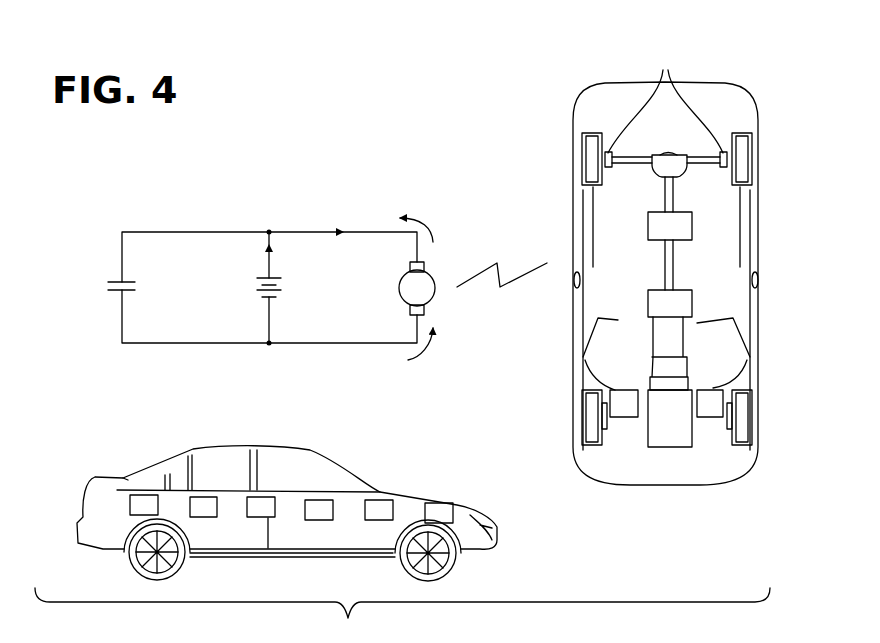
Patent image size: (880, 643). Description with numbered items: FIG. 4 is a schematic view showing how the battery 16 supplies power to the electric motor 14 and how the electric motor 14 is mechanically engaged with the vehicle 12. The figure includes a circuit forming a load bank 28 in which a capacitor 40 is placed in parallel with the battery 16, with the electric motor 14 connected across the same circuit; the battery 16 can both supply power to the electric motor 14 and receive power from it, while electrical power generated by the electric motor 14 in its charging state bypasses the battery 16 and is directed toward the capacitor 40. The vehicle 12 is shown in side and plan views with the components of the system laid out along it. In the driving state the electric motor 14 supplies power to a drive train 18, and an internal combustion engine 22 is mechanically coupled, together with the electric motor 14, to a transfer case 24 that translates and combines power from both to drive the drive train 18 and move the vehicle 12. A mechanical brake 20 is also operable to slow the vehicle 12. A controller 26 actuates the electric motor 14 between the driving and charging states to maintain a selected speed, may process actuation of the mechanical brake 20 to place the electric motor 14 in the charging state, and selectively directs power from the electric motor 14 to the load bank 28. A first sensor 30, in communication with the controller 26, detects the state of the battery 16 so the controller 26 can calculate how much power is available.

The vehicle 12 is at (592, 68).
The electric motor 14 is at (437, 283).
The battery 16 is at (282, 280).
The drive train 18 is at (440, 505).
The mechanical brake 20 is at (378, 502).
The internal combustion engine 22 is at (322, 502).
The transfer case 24 is at (262, 500).
The controller 26 is at (205, 497).
The load bank 28 is at (93, 229).
The first sensor 30 is at (142, 497).
The capacitor 40 is at (114, 287).